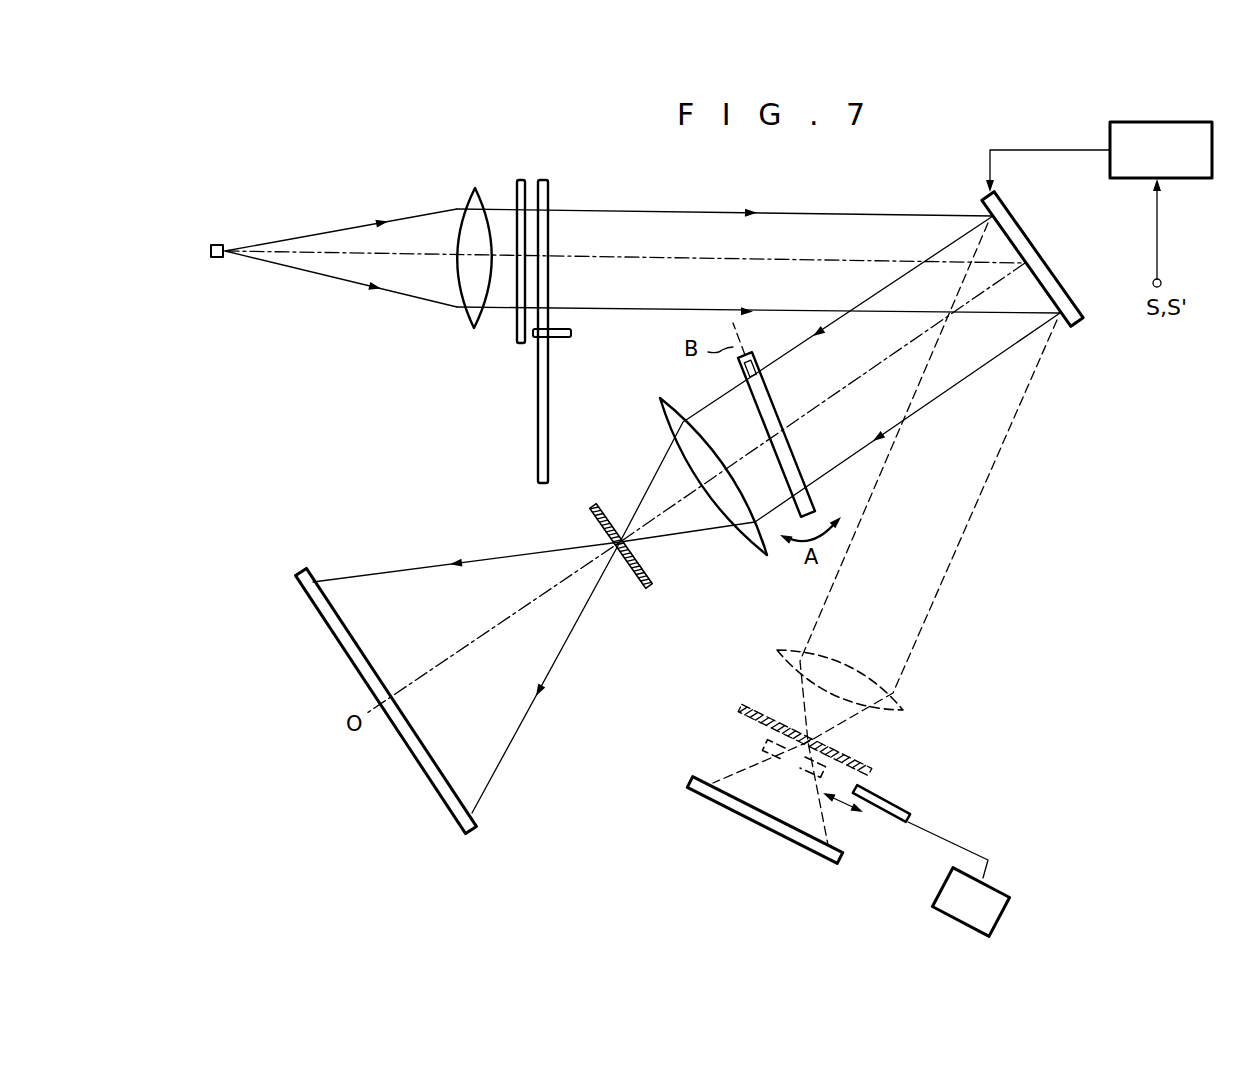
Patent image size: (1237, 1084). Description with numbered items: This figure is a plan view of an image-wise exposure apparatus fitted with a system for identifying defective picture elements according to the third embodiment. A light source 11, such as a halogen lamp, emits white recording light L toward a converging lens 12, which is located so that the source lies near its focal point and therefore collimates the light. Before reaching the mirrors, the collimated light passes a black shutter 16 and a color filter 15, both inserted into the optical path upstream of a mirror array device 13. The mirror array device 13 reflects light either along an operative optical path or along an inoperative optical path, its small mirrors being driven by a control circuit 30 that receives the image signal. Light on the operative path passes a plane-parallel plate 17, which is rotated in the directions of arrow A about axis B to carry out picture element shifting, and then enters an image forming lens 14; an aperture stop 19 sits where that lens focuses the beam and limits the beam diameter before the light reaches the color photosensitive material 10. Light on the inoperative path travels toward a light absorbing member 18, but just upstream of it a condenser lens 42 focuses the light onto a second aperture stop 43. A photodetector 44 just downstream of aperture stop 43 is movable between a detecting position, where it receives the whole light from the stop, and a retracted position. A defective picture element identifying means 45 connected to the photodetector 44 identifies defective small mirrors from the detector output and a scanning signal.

The color photosensitive material 10 is at (431, 780).
The light source 11 is at (221, 242).
The converging lens 12 is at (467, 192).
The mirror array device 13 is at (1018, 238).
The image forming lens 14 is at (757, 552).
The color filter 15 is at (548, 183).
The black shutter 16 is at (521, 180).
The plane-parallel plate 17 is at (797, 459).
The light absorbing member 18 is at (762, 827).
The aperture stop 19 is at (650, 591).
The control circuit 30 is at (1110, 132).
The condenser lens 42 is at (903, 708).
The aperture stop 43 is at (867, 757).
The photodetector 44 is at (897, 803).
The defective picture element identifying means 45 is at (1008, 897).